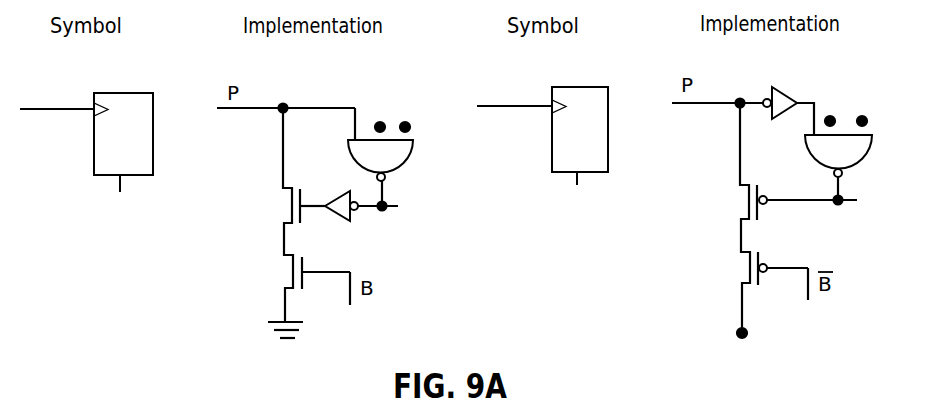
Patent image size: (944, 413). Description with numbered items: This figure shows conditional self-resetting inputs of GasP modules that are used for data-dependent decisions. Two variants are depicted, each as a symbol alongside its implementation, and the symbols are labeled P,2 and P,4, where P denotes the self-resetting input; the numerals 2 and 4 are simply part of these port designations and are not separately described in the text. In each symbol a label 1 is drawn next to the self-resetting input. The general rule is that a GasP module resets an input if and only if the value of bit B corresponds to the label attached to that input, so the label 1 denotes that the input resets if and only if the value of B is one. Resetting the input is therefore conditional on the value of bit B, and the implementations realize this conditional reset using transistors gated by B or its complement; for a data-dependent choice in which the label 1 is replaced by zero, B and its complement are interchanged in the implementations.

The P-type logic cell symbol P 2 is at (86, 152).
The P-type logic cell symbol P 4 is at (542, 147).
The label 1 is at (114, 111).